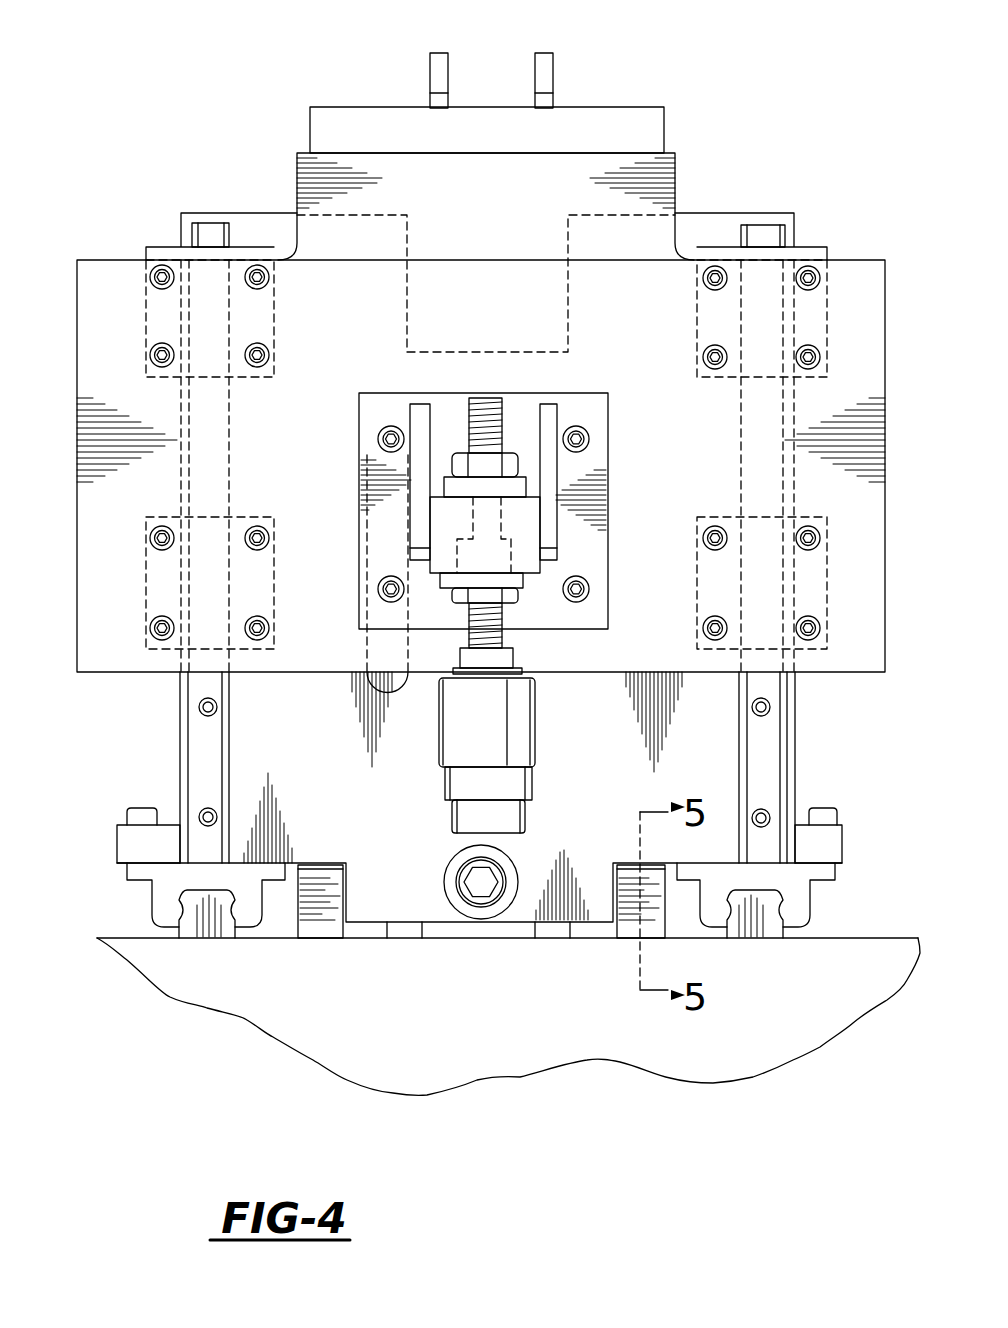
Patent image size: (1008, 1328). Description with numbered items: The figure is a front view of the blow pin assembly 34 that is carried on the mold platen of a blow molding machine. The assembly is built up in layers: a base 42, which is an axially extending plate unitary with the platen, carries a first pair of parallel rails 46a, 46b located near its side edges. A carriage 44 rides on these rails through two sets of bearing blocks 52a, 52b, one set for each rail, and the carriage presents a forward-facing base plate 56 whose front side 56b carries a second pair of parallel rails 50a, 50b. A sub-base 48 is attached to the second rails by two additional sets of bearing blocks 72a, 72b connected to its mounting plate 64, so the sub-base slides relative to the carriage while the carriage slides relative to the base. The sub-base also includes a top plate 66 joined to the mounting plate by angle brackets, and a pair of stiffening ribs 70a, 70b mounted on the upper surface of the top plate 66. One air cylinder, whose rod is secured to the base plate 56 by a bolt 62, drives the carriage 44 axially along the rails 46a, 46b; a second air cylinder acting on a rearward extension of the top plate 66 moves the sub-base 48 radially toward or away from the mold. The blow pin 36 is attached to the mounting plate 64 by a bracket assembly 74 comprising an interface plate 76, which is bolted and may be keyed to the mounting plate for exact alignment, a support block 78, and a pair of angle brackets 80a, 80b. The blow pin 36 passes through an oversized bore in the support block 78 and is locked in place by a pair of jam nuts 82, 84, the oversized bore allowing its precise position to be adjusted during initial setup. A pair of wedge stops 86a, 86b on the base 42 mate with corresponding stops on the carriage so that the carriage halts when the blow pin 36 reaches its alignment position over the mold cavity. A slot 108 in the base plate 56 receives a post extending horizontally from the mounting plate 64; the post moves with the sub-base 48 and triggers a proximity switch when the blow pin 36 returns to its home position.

The blow pin assembly 34 is at (222, 128).
The blow pin 36 is at (443, 790).
The base 42 is at (118, 947).
The carriage 44 is at (105, 848).
The rail 46a is at (212, 927).
The rail 46b is at (758, 932).
The sub-base 48 is at (130, 678).
The rail 50a is at (213, 747).
The rail 50b is at (775, 763).
The bearing blocks 52a is at (162, 890).
The bearing blocks 52b is at (802, 895).
The base plate 56 is at (262, 213).
The front side of base plate 56b is at (705, 213).
The bolt 62 is at (483, 892).
The mounting plate 64 is at (107, 270).
The top plate 66 is at (664, 125).
The stiffening rib 70a is at (438, 53).
The stiffening rib 70b is at (553, 53).
The bearing blocks 72a is at (165, 247).
The bearing blocks 72b is at (815, 247).
The bracket assembly 74 is at (620, 395).
The interface plate 76 is at (367, 421).
The support block 78 is at (528, 536).
The angle bracket 80a is at (431, 410).
The angle bracket 80b is at (548, 467).
The jam nut 82 is at (522, 462).
The jam nut 84 is at (513, 596).
The wedge stop 86a is at (313, 928).
The wedge stop 86b is at (628, 923).
The slot 108 is at (362, 697).